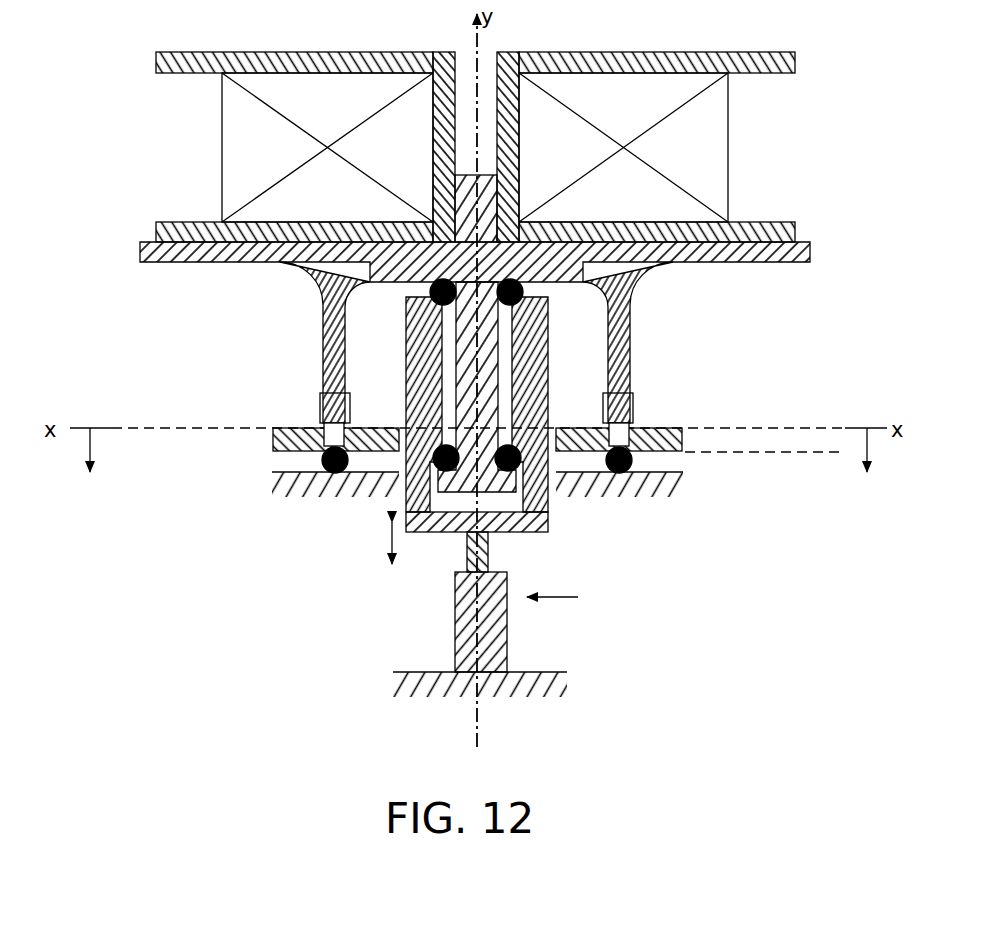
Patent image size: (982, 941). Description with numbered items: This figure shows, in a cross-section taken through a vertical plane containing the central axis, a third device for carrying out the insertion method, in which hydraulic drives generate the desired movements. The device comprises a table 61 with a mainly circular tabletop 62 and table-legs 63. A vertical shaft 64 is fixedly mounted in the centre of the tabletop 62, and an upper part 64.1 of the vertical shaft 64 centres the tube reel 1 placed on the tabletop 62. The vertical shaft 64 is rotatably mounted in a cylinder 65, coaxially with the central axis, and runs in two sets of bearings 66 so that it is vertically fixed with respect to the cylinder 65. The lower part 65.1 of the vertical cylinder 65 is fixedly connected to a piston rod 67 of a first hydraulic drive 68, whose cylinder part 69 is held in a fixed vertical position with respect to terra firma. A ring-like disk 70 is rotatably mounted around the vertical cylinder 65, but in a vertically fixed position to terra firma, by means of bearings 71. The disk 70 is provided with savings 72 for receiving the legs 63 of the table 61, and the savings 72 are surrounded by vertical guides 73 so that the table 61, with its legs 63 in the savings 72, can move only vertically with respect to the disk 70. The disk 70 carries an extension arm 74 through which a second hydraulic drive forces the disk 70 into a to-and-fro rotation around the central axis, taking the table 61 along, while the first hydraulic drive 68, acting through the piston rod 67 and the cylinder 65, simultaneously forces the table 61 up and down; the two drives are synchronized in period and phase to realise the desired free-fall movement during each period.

The tube reel 1 is at (760, 221).
The table 61 is at (476, 332).
The tabletop 62 is at (733, 262).
The table-legs 63 is at (323, 352).
The vertical shaft 64 is at (498, 332).
The upper part of the vertical shaft 64.1 is at (496, 178).
The cylinder 65 is at (532, 438).
The lower part of the vertical cylinder 65.1 is at (552, 513).
The bearings 66 is at (432, 302).
The piston rod 67 is at (490, 548).
The first hydraulic drive 68 is at (569, 600).
The cylinder part 69 is at (455, 632).
The ring-like disk 70 is at (666, 423).
The bearings 71 is at (328, 474).
The savings 72 is at (338, 433).
The vertical guides 73 is at (320, 403).
The extension arm 74 is at (780, 452).